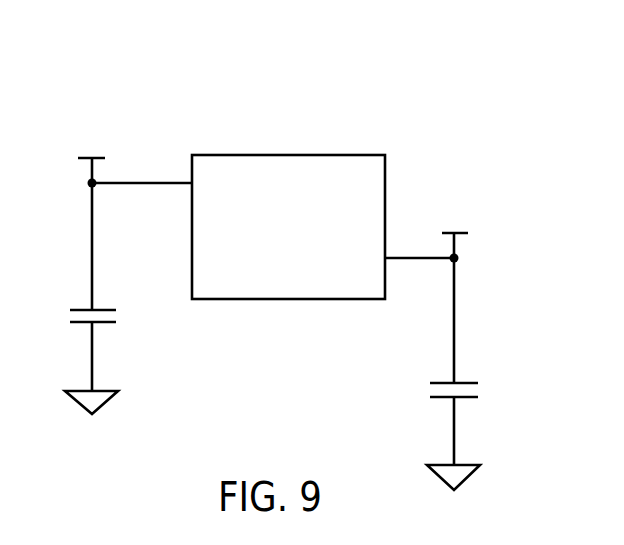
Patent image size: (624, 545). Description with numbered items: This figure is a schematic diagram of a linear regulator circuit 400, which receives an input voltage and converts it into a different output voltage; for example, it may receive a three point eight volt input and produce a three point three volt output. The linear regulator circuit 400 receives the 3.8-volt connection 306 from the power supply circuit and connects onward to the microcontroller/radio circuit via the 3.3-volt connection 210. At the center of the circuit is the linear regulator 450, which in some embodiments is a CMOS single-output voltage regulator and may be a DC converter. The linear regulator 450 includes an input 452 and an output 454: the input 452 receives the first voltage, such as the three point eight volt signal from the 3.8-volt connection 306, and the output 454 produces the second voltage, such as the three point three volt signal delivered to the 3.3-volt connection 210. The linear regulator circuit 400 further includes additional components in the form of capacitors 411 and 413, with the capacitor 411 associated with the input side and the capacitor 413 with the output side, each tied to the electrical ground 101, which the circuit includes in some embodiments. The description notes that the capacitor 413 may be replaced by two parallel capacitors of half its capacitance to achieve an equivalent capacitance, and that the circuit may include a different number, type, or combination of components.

The linear regulator circuit 400 is at (205, 92).
The 3.8-volt connection 306 is at (92, 126).
The linear regulator 450 is at (307, 155).
The input 452 is at (186, 188).
The output 454 is at (391, 263).
The 3.3-volt connection 210 is at (453, 200).
The capacitor 411 is at (80, 308).
The capacitor 413 is at (465, 383).
The electrical ground 101 is at (76, 406).